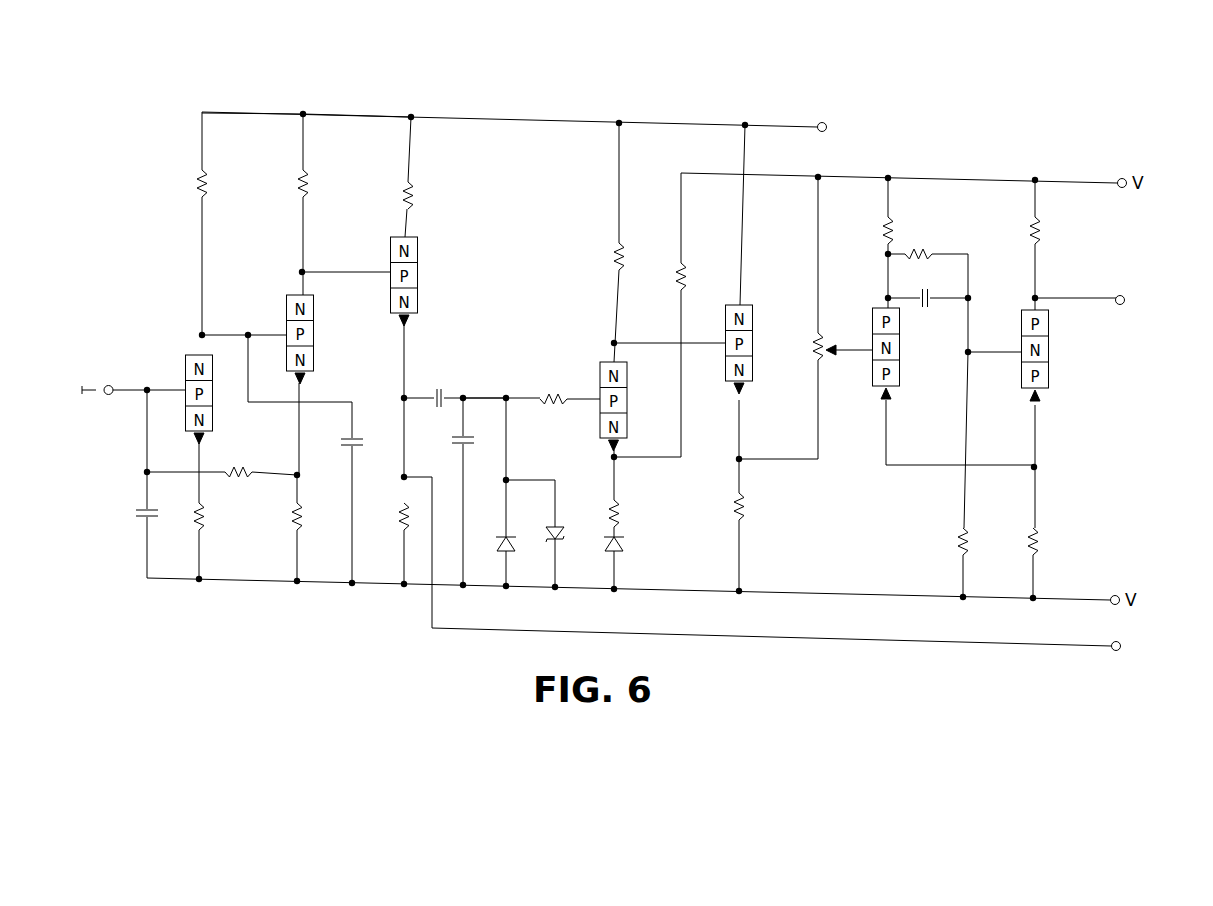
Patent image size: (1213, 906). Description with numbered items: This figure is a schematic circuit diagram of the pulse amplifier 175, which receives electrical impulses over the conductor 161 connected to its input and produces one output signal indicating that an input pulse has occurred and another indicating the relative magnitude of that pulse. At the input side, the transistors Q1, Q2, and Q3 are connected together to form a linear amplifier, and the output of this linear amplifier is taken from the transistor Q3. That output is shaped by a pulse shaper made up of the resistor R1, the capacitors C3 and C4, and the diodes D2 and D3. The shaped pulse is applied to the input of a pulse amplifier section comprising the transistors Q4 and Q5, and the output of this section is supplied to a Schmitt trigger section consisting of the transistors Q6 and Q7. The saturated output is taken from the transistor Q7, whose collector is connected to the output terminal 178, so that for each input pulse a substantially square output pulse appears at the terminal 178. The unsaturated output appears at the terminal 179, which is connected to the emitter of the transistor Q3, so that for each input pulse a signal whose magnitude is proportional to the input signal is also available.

The conductor 161 is at (98, 387).
The pulse amplifier 175 is at (492, 102).
The output terminal 178 is at (1121, 295).
The terminal 179 is at (1112, 641).
The transistor Q1 is at (212, 418).
The transistor Q2 is at (314, 343).
The transistor Q3 is at (418, 258).
The transistor Q4 is at (627, 392).
The transistor Q5 is at (752, 325).
The transistor Q6 is at (900, 351).
The transistor Q7 is at (1048, 352).
The capacitor C3 is at (444, 392).
The capacitor C4 is at (451, 446).
The resistor R1 is at (398, 521).
The diode D2 is at (510, 547).
The diode D3 is at (560, 525).